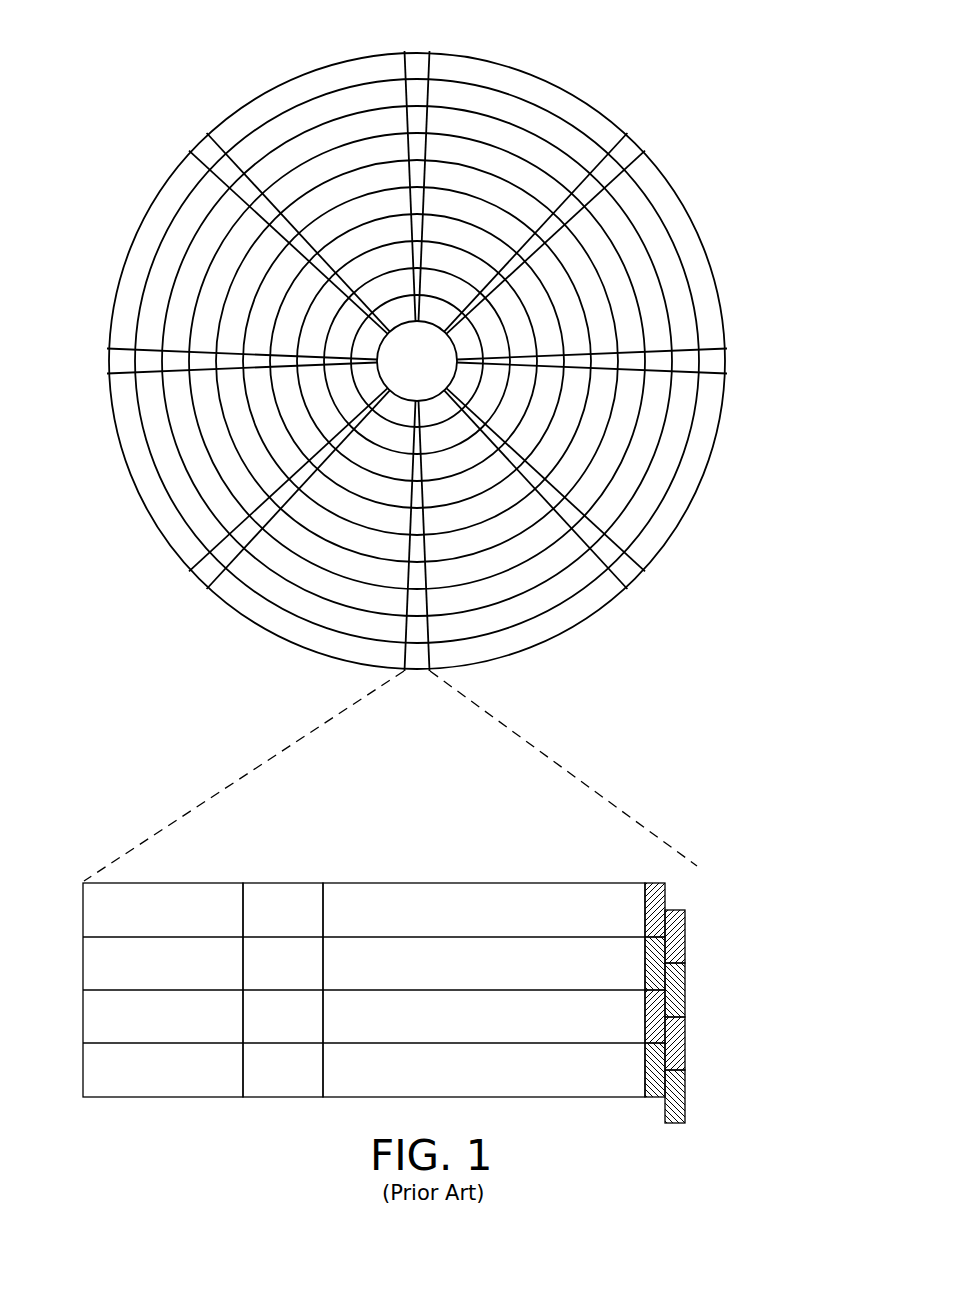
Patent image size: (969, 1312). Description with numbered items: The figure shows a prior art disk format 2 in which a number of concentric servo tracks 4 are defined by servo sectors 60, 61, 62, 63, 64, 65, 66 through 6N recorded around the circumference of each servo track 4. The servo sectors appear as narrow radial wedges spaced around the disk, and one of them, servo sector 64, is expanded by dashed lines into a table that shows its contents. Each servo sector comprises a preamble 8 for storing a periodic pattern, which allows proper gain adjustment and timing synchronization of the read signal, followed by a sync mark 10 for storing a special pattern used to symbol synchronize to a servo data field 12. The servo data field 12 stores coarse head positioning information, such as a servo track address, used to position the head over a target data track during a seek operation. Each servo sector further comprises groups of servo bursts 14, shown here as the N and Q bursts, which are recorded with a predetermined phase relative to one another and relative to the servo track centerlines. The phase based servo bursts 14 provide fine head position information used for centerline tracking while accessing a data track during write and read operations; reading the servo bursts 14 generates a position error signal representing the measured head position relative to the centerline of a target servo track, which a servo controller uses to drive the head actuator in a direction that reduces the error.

The disk format 2 is at (186, 58).
The servo track 4 is at (543, 100).
The servo sector 60 is at (417, 52).
The servo sector 61 is at (634, 150).
The servo sector 62 is at (732, 361).
The servo sector 63 is at (639, 583).
The servo sector 64 is at (281, 740).
The servo sector 65 is at (197, 583).
The servo sector 66 is at (108, 361).
The servo sector 6N is at (207, 150).
The preamble 8 is at (172, 883).
The sync mark 10 is at (284, 883).
The servo data field 12 is at (476, 883).
The servo bursts 14 is at (688, 878).